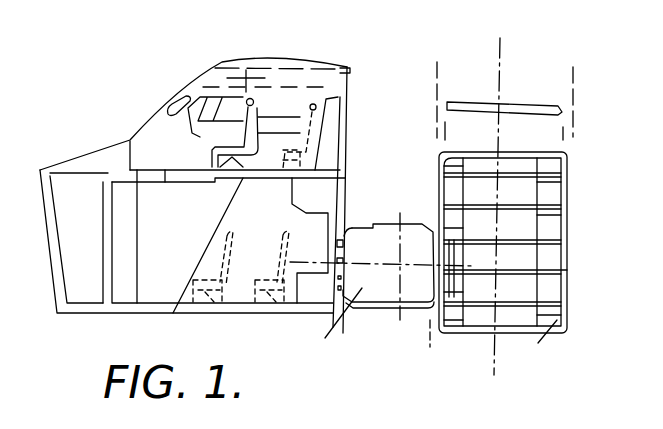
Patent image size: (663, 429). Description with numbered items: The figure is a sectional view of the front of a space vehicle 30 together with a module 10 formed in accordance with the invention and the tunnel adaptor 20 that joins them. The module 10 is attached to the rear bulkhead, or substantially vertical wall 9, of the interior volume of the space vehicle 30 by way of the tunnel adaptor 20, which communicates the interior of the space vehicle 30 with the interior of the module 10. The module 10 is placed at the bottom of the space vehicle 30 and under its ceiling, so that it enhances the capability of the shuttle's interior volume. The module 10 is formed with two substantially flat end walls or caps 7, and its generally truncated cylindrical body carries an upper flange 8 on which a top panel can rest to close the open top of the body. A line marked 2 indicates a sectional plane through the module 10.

The space vehicle 30 is at (228, 50).
The rear bulkhead or substantially vertical wall 9 is at (347, 127).
The tunnel adaptor 20 is at (376, 308).
The module 10 is at (580, 122).
The upper flange 8 is at (447, 160).
The section line II-II 2 is at (498, 206).
The substantially flat end wall or cap 7 is at (563, 307).